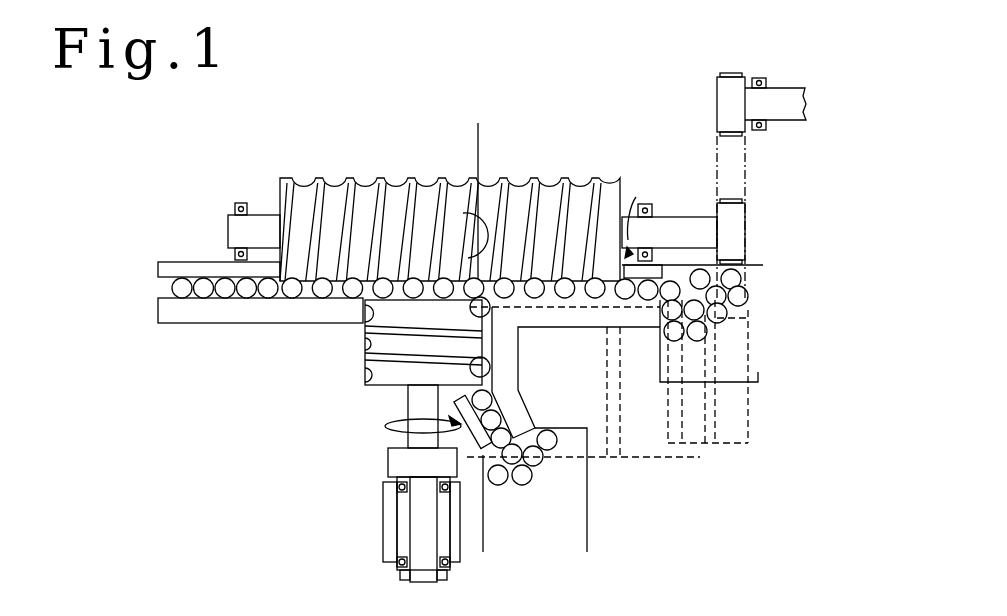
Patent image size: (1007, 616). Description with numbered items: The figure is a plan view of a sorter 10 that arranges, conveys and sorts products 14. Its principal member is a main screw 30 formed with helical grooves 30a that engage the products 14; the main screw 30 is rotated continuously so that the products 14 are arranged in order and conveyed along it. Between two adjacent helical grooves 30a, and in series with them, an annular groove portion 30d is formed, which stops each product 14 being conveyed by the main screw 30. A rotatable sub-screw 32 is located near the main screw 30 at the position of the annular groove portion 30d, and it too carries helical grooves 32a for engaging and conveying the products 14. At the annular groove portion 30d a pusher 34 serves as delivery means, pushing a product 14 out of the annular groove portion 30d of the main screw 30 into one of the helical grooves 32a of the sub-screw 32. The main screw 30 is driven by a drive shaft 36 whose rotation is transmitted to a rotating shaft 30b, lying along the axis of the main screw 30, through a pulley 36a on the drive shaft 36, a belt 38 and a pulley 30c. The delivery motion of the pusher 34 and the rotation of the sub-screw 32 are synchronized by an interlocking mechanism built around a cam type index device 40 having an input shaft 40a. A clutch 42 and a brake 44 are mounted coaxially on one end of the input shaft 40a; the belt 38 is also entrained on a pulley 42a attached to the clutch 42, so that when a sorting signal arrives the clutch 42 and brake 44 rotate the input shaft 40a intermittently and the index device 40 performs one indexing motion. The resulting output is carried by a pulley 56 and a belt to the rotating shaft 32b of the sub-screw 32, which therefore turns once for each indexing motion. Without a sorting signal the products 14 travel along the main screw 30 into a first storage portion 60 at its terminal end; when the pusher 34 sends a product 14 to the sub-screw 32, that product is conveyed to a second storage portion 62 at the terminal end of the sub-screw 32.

The sorter 10 is at (577, 112).
The products 14 is at (222, 300).
The main screw 30 is at (450, 170).
The helical grooves 30a is at (362, 178).
The rotating shaft 30b is at (688, 215).
The pulley 30c is at (745, 235).
The annular groove portion 30d is at (463, 213).
The sub-screw 32 is at (367, 378).
The helical grooves 32a is at (368, 350).
The rotating shaft 32b is at (413, 405).
The pusher 34 is at (478, 145).
The drive shaft 36 is at (785, 88).
The pulley 36a is at (722, 102).
The belt 38 is at (750, 150).
The cam type index device 40 is at (565, 460).
The input shaft 40a is at (753, 370).
The clutch 42 is at (717, 452).
The pulley 42a is at (750, 423).
The brake 44 is at (674, 452).
The pulley 56 is at (397, 462).
The first storage portion 60 is at (660, 355).
The second storage portion 62 is at (587, 530).